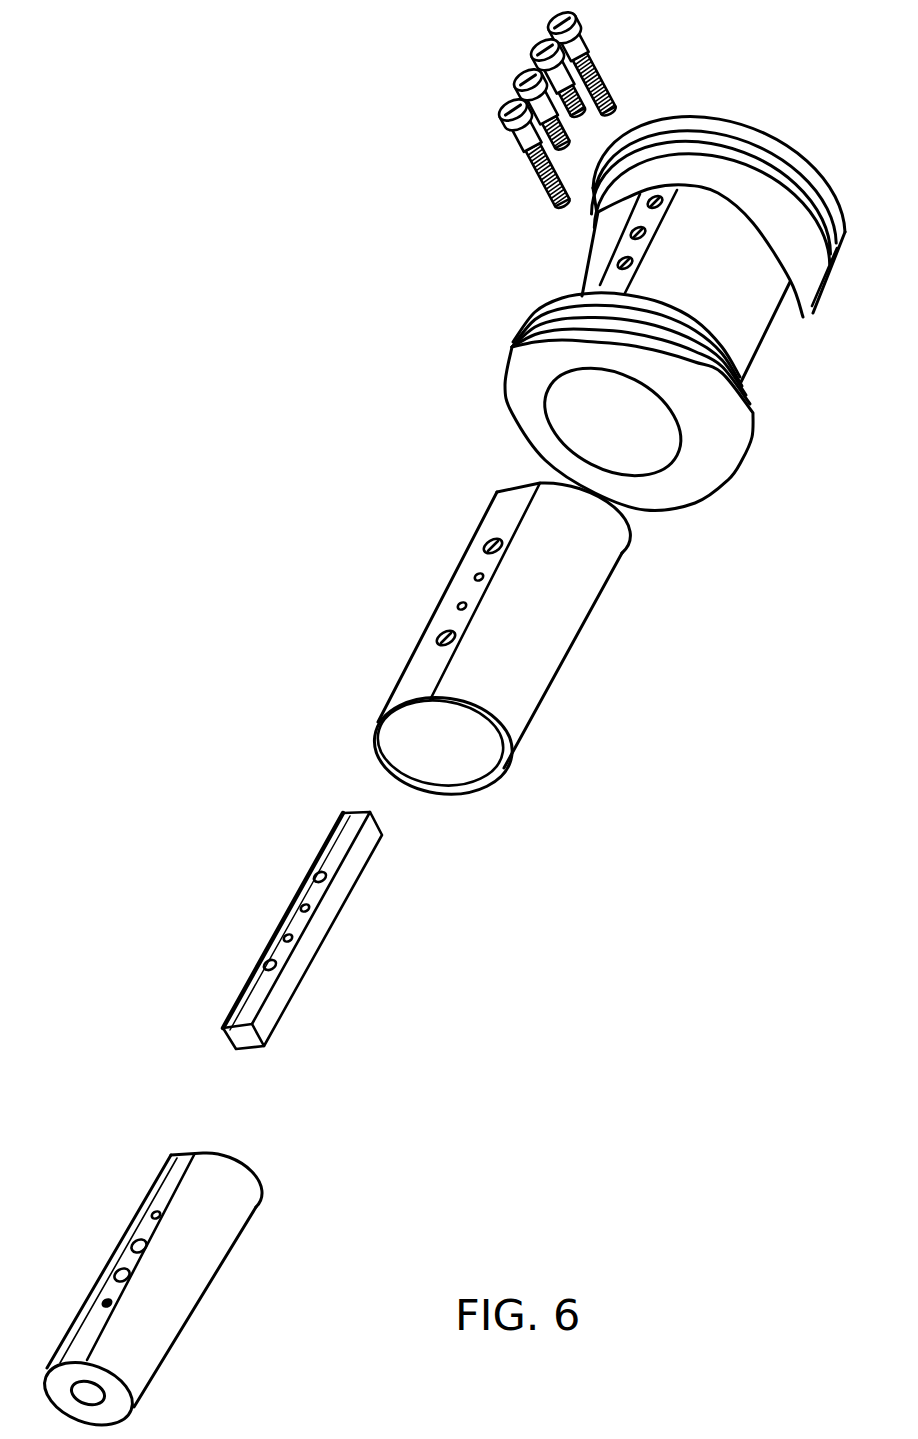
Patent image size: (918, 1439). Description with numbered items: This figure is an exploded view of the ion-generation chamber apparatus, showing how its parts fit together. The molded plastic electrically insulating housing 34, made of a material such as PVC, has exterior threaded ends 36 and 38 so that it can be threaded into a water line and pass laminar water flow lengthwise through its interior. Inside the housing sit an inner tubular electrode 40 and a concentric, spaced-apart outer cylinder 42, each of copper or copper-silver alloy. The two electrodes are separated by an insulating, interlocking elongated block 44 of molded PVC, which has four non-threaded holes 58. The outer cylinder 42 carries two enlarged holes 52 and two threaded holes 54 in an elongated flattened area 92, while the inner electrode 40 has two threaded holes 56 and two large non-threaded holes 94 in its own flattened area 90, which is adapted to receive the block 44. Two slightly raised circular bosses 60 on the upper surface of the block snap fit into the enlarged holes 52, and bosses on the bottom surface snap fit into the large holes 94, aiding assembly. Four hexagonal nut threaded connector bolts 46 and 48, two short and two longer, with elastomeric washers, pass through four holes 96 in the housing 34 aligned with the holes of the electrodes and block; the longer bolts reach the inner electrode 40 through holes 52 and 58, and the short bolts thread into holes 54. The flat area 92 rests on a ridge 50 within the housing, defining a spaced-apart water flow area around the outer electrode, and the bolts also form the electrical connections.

The housing 34 is at (737, 294).
The exterior threaded end 36 is at (513, 345).
The exterior threaded end 38 is at (762, 144).
The inner tubular electrode 40 is at (196, 1282).
The outer cylinder 42 is at (549, 617).
The elongated block 44 is at (290, 979).
The connector bolt 46 is at (501, 104).
The connector bolt 48 is at (534, 44).
The ridge 50 is at (590, 370).
The enlarged holes 52 is at (440, 637).
The threaded holes 54 is at (460, 604).
The threaded holes 56 is at (104, 1303).
The holes 58 is at (287, 936).
The raised circular bosses 60 is at (268, 963).
The flattened area 90 is at (183, 1162).
The flattened area 92 is at (430, 680).
The large non-threaded holes 94 is at (116, 1270).
The holes 96 is at (612, 265).